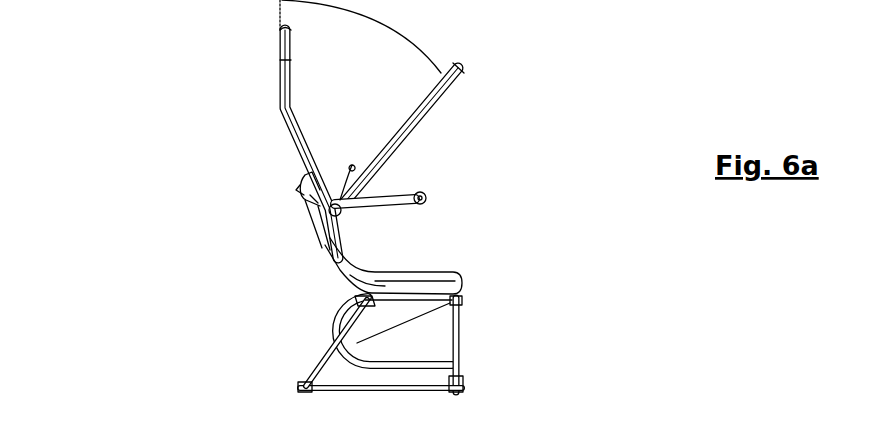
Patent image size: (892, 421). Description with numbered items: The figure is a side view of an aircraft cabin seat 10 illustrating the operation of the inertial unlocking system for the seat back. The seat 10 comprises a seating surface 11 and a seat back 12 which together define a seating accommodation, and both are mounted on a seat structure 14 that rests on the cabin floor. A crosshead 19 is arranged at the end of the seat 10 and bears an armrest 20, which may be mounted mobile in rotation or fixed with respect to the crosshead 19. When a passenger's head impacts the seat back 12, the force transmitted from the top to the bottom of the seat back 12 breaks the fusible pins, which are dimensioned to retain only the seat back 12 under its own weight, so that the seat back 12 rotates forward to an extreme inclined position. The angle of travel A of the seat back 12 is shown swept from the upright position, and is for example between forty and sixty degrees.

The seat 10 is at (176, 157).
The seating surface 11 is at (417, 270).
The seat back 12 is at (280, 75).
The seat structure 14 is at (313, 325).
The crosshead 19 is at (320, 247).
The armrest 20 is at (413, 190).
The angle of travel A is at (387, 25).